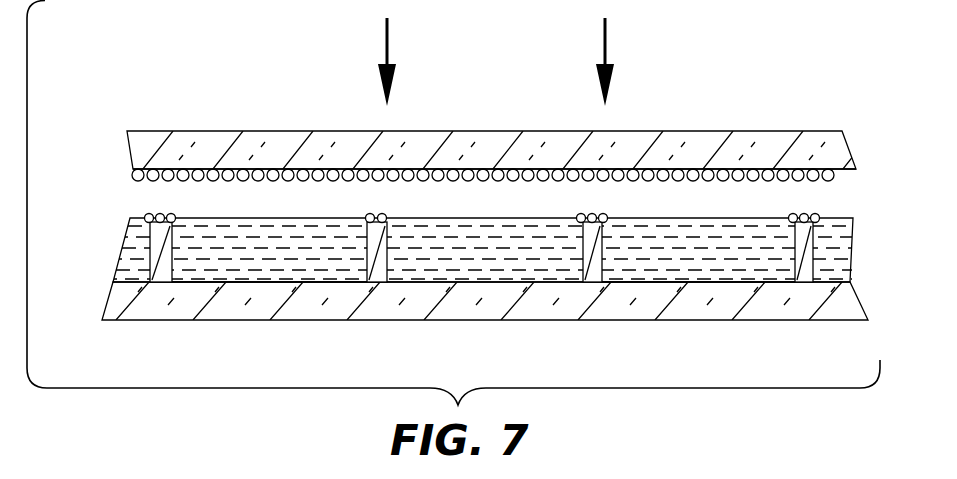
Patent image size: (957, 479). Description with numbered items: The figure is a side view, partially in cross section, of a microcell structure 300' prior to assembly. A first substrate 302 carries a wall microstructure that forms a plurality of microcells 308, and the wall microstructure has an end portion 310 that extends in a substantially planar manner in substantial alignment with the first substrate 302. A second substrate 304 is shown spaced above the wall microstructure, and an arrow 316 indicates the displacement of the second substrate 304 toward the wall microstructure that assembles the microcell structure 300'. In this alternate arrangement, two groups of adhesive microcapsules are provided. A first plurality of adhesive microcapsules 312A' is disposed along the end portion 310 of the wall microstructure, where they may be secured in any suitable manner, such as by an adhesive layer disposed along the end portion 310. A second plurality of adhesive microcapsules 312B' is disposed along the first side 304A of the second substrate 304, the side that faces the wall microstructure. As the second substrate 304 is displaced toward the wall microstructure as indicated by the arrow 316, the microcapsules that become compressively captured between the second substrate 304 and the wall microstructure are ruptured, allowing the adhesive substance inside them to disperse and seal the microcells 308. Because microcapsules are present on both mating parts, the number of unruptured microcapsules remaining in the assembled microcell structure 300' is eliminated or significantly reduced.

The microcell structure 300' is at (473, 184).
The second substrate 304 is at (138, 155).
The first side of second substrate 304A is at (212, 171).
The second plurality of adhesive microcapsules 312B' is at (483, 138).
The arrow 316 is at (606, 52).
The first substrate 302 is at (150, 308).
The end portion of wall microstructure 310 is at (158, 228).
The microcells 308 is at (655, 276).
The first plurality of adhesive microcapsules 312A' is at (439, 236).